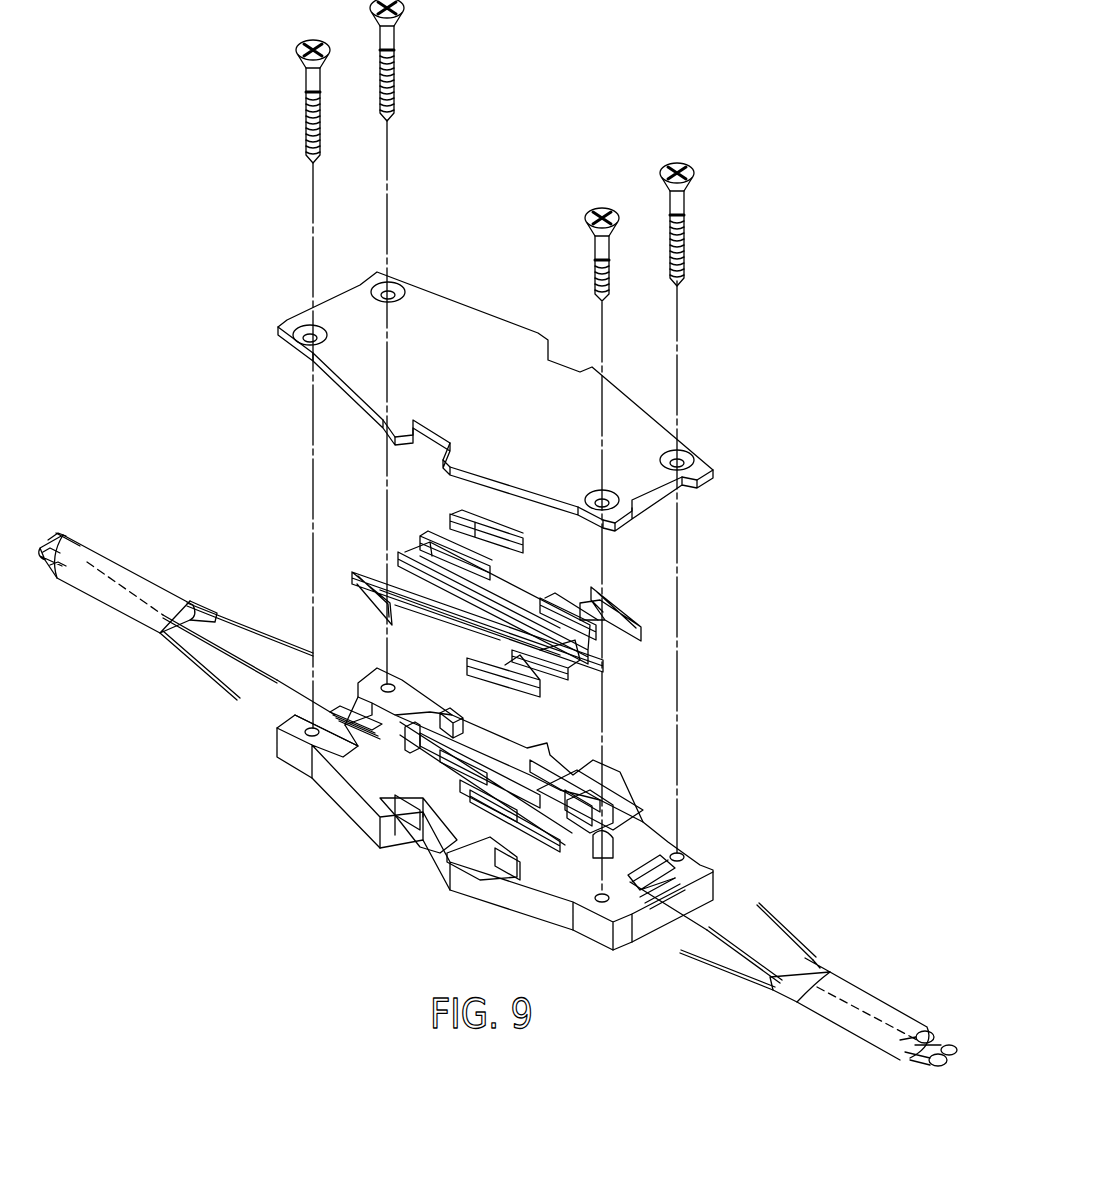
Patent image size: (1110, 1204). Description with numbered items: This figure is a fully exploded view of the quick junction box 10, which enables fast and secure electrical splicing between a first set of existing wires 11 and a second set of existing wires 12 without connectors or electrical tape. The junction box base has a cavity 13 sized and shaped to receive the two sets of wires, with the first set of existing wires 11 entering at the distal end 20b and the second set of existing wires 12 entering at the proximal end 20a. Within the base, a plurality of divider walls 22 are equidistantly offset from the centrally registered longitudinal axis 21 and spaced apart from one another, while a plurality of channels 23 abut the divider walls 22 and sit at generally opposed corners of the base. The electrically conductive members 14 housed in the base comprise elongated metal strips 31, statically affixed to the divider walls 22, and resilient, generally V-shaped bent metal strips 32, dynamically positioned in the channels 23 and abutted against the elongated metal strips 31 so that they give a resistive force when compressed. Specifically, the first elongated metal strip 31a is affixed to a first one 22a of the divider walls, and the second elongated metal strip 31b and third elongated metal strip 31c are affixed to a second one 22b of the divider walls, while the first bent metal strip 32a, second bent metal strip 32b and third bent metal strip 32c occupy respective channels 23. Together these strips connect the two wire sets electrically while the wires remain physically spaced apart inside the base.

The quick junction box 10 is at (217, 232).
The first set of existing wires 11 is at (130, 582).
The second set of existing wires 12 is at (850, 993).
The cavity 13 is at (363, 745).
The electrically conductive members 14 is at (657, 595).
The proximal end 20a is at (343, 693).
The distal end 20b is at (657, 925).
The centrally registered longitudinal axis 21 is at (300, 695).
The divider walls 22 is at (550, 860).
The first one of the divider walls 22a is at (542, 792).
The second one of the divider walls 22b is at (517, 833).
The channels 23 is at (470, 760).
The elongated metal strips 31 is at (597, 687).
The first elongated metal strip 31a is at (442, 542).
The second elongated metal strip 31b is at (392, 558).
The third elongated metal strip 31c is at (515, 651).
The bent metal strips 32 is at (343, 587).
The first bent metal strip 32a is at (602, 590).
The second bent metal strip 32b is at (480, 670).
The third bent metal strip 32c is at (558, 630).